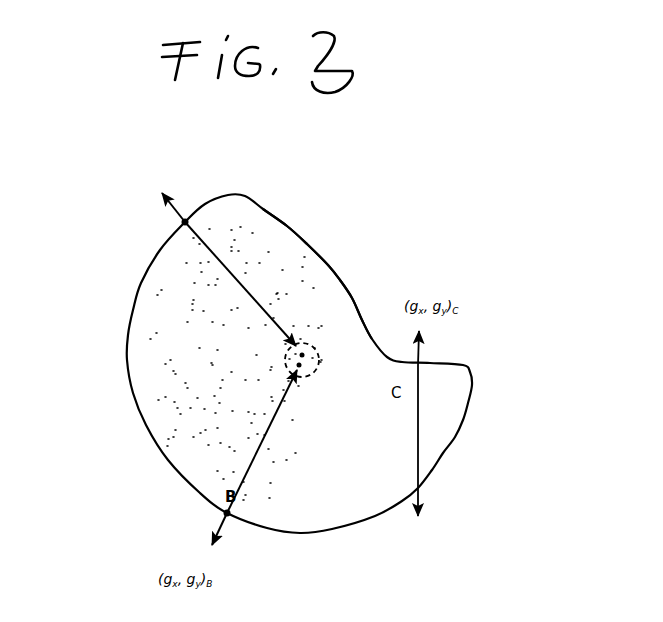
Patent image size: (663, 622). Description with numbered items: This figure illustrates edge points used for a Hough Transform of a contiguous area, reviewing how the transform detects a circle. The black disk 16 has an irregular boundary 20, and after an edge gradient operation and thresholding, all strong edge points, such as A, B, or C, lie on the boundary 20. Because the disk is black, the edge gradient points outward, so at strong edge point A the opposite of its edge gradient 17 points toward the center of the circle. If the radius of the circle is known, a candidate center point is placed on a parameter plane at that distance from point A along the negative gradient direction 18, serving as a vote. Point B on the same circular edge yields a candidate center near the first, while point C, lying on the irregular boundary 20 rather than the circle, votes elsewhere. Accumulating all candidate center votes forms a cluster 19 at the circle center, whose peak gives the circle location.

The black disk 16 is at (126, 352).
The edge gradient 17 is at (165, 218).
The negative gradient direction 18 is at (260, 296).
The cluster 19 is at (312, 382).
The irregular boundary 20 is at (338, 265).